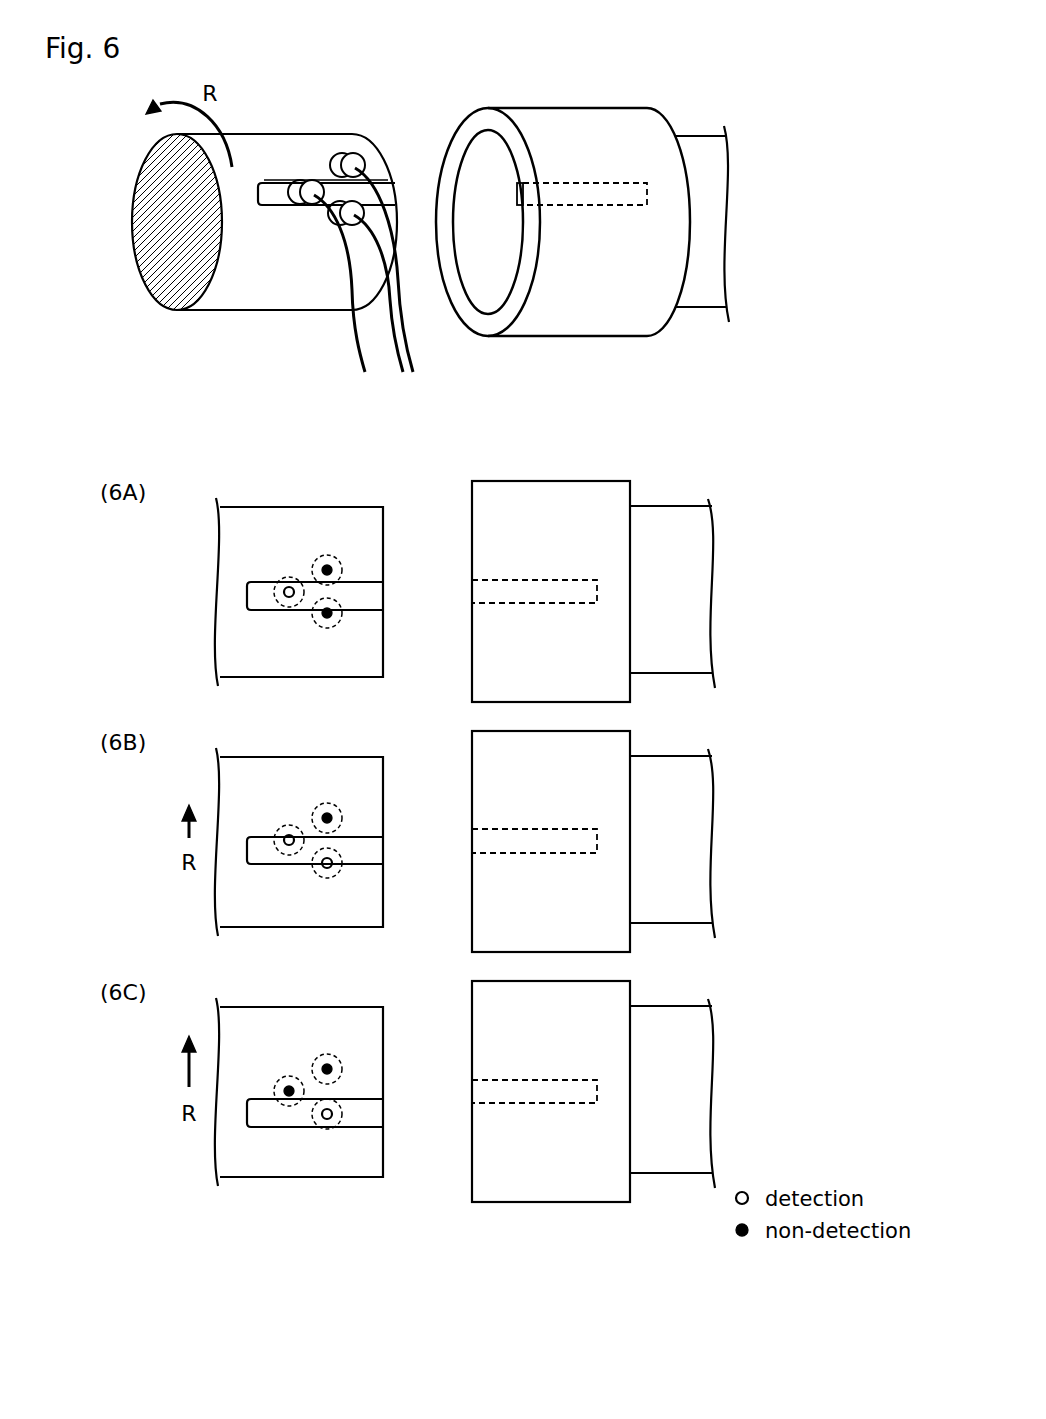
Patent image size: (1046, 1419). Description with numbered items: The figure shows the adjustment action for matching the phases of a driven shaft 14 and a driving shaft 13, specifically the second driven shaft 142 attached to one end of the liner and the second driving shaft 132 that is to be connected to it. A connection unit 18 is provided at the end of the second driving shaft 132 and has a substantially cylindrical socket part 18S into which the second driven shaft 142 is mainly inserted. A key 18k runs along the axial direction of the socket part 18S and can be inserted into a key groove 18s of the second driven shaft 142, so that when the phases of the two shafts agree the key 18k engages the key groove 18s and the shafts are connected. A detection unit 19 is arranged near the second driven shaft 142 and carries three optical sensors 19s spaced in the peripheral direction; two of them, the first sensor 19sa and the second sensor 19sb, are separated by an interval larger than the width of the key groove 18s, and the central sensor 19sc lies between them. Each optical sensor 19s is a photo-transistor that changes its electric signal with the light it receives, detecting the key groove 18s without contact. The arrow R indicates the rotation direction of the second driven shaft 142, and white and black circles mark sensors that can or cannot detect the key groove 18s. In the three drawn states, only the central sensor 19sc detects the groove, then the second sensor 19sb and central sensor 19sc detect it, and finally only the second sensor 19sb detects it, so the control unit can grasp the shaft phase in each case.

The driving shaft 13 is at (681, 657).
The second driving shaft 132 is at (701, 309).
The driven shaft 14 is at (264, 262).
The second driven shaft 142 is at (271, 312).
The connection unit 18 is at (562, 621).
The key 18k is at (582, 181).
The socket part 18S is at (572, 337).
The key groove 18s is at (269, 182).
The detection unit 19 is at (331, 612).
The optical sensors 19s is at (331, 612).
The first sensor 19sa is at (328, 1052).
The second sensor 19sb is at (334, 224).
The central sensor 19sc is at (297, 205).